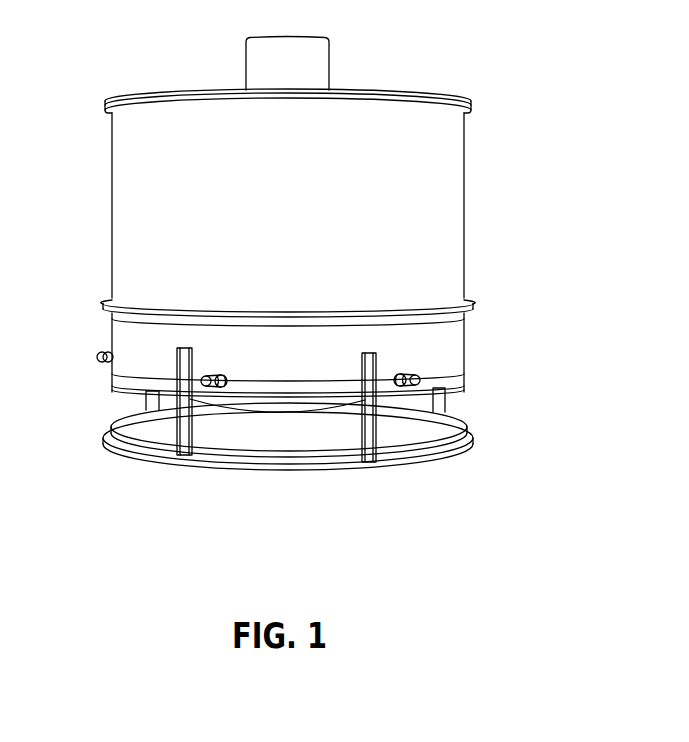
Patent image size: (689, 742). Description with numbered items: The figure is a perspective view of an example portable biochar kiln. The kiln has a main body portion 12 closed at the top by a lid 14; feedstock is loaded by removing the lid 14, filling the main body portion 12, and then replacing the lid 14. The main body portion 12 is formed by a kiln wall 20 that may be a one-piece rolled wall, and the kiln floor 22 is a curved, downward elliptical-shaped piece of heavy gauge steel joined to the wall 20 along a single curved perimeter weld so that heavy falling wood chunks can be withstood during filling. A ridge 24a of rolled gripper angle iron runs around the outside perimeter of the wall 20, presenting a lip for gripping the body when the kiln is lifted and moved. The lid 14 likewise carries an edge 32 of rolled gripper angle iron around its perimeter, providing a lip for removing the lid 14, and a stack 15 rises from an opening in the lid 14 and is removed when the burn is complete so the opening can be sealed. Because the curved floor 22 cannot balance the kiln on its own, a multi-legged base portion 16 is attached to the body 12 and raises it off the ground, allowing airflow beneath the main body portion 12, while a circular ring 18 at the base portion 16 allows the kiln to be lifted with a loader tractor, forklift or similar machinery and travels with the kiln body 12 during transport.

The main body portion 12 is at (465, 213).
The lid 14 is at (215, 91).
The stack 15 is at (330, 58).
The kiln wall 20 is at (300, 235).
The flange band 24a is at (472, 303).
The kiln floor 22 is at (263, 412).
The edge 32 is at (220, 372).
The ring 18 is at (126, 418).
The base portion 16 is at (437, 460).